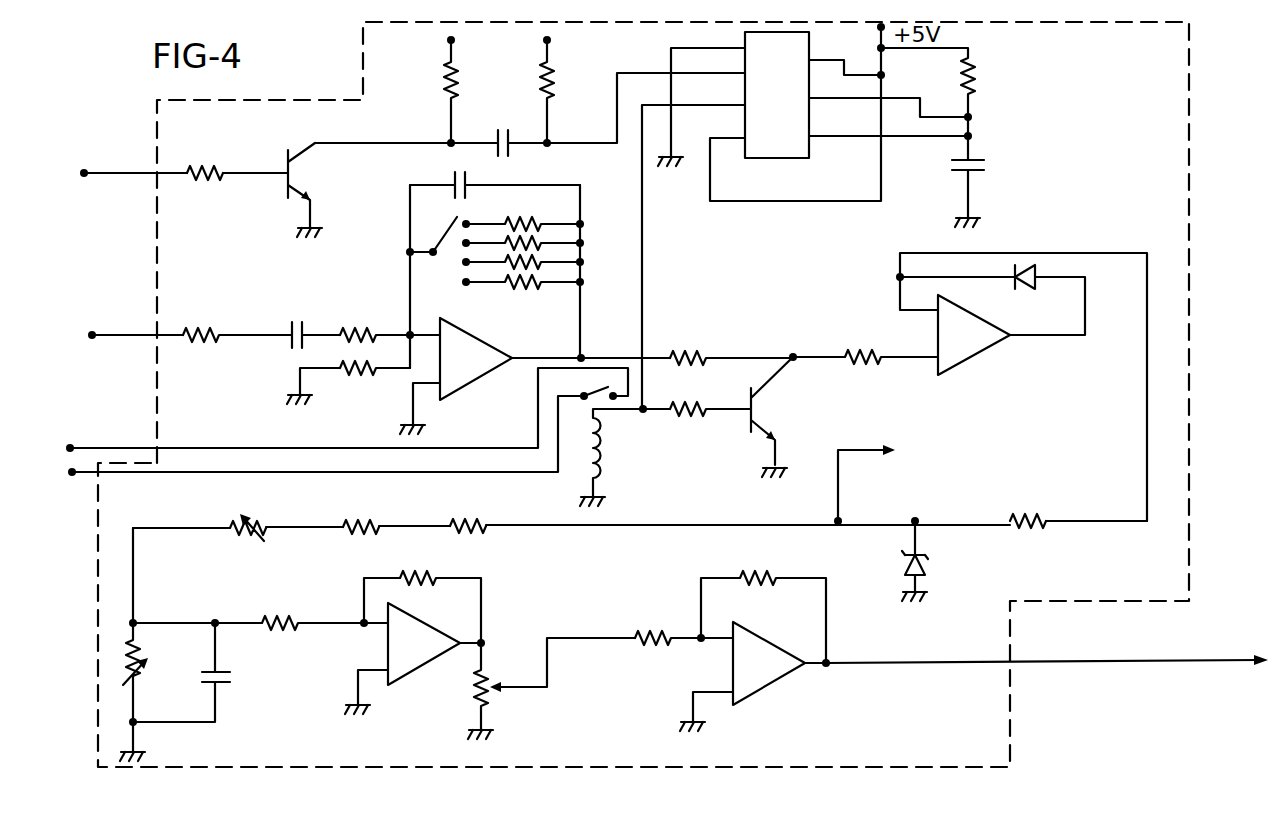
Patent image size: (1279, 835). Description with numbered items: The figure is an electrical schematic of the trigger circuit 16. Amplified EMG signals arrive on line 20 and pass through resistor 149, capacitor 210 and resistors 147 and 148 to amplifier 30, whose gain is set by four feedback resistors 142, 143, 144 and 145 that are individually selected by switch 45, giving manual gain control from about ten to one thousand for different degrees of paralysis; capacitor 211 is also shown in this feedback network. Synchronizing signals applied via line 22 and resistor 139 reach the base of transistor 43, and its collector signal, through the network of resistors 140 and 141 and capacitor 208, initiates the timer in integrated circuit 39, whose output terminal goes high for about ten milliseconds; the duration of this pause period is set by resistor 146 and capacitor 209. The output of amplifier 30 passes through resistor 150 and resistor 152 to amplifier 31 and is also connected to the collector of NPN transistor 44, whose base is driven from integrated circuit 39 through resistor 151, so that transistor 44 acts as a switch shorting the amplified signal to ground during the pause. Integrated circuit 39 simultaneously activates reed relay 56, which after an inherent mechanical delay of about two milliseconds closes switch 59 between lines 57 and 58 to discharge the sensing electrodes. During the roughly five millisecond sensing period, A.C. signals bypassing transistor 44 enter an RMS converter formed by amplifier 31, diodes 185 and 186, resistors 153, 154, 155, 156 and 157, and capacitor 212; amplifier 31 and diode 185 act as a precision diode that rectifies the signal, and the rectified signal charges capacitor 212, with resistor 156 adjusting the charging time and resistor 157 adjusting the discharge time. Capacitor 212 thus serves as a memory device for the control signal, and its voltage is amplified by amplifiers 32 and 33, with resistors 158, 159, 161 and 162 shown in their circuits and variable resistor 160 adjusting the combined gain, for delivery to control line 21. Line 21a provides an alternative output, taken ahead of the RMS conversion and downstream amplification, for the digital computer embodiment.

The trigger circuit 16 is at (1012, 642).
The line 20 is at (96, 338).
The control line 21 is at (1042, 665).
The line 21a is at (873, 442).
The line 22 is at (96, 176).
The amplifier 30 is at (470, 385).
The amplifier 31 is at (975, 355).
The amplifier 32 is at (405, 690).
The amplifier 33 is at (770, 685).
The integrated circuit 39 is at (772, 160).
The transistor 43 is at (285, 182).
The NPN transistor 44 is at (742, 415).
The switch 45 is at (440, 233).
The reed relay 56 is at (608, 453).
The line 57 is at (196, 446).
The line 58 is at (190, 475).
The switch 59 is at (600, 386).
The resistor 139 is at (225, 170).
The resistor 140 is at (445, 82).
The resistor 141 is at (553, 78).
The feedback resistor 142 is at (530, 215).
The feedback resistor 143 is at (548, 228).
The feedback resistor 144 is at (548, 264).
The feedback resistor 145 is at (535, 288).
The resistor 146 is at (975, 82).
The resistor 147 is at (362, 328).
The resistor 148 is at (358, 380).
The resistor 149 is at (203, 330).
The resistor 150 is at (690, 352).
The resistor 151 is at (705, 404).
The resistor 152 is at (855, 350).
The resistor 153 is at (1030, 516).
The resistor 154 is at (478, 520).
The resistor 155 is at (376, 521).
The resistor 156 is at (258, 522).
The resistor 157 is at (128, 650).
The resistor 158 is at (265, 618).
The resistor 159 is at (404, 570).
The variable resistor 160 is at (478, 712).
The resistor 161 is at (655, 633).
The resistor 162 is at (762, 572).
The diode 185 is at (1022, 292).
The diode 186 is at (928, 560).
The capacitor 208 is at (500, 128).
The capacitor 209 is at (985, 165).
The capacitor 210 is at (297, 320).
The capacitor 211 is at (458, 172).
The capacitor 212 is at (232, 684).